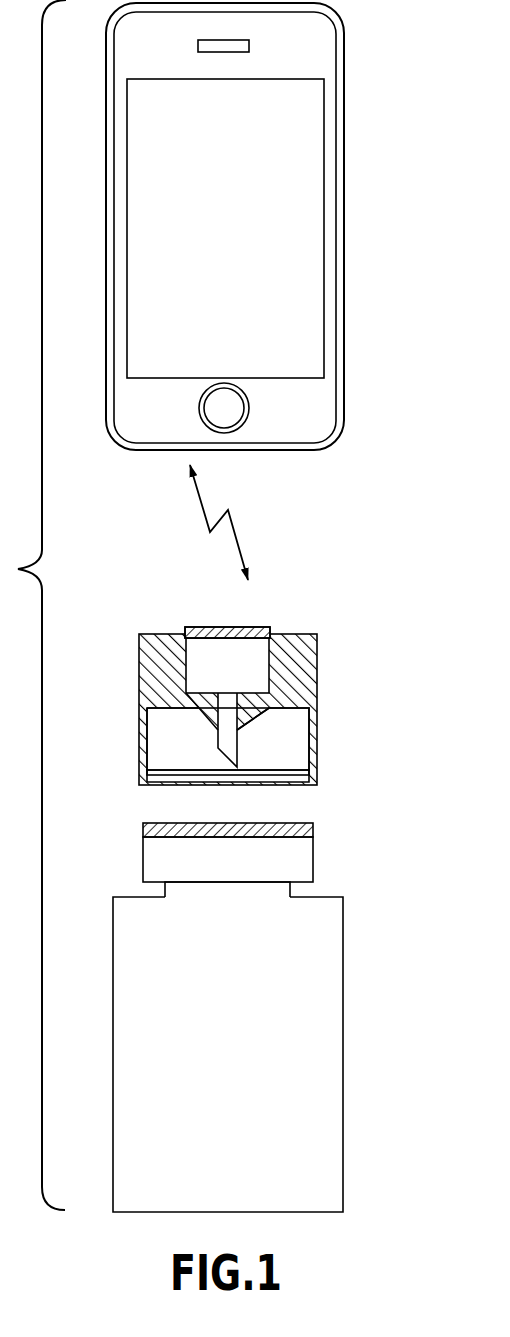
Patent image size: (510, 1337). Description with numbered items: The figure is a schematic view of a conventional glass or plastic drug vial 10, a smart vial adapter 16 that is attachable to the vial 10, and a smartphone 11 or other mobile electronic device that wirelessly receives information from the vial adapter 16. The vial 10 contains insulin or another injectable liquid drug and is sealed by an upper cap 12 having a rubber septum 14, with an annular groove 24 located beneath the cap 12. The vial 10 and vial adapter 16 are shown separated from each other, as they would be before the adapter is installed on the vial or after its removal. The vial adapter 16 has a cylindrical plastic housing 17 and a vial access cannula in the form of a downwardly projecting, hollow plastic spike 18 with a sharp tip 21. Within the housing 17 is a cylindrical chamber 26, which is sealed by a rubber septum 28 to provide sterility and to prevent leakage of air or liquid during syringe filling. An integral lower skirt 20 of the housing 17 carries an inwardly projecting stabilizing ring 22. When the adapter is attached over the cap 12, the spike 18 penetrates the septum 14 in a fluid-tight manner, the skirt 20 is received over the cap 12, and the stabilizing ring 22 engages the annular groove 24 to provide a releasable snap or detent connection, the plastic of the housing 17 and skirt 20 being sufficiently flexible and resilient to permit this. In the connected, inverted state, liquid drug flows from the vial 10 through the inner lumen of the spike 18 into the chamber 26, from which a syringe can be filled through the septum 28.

The drug vial 10 is at (365, 1023).
The smartphone 11 is at (368, 233).
The upper cap 12 is at (313, 860).
The rubber septum 14 is at (302, 823).
The smart vial adapter 16 is at (244, 705).
The housing 17 is at (141, 672).
The spike 18 is at (237, 748).
The lower skirt 20 is at (141, 737).
The sharp tip 21 is at (235, 750).
The stabilizing ring 22 is at (183, 776).
The annular groove 24 is at (162, 890).
The cylindrical chamber 26 is at (268, 659).
The rubber septum 28 is at (207, 628).